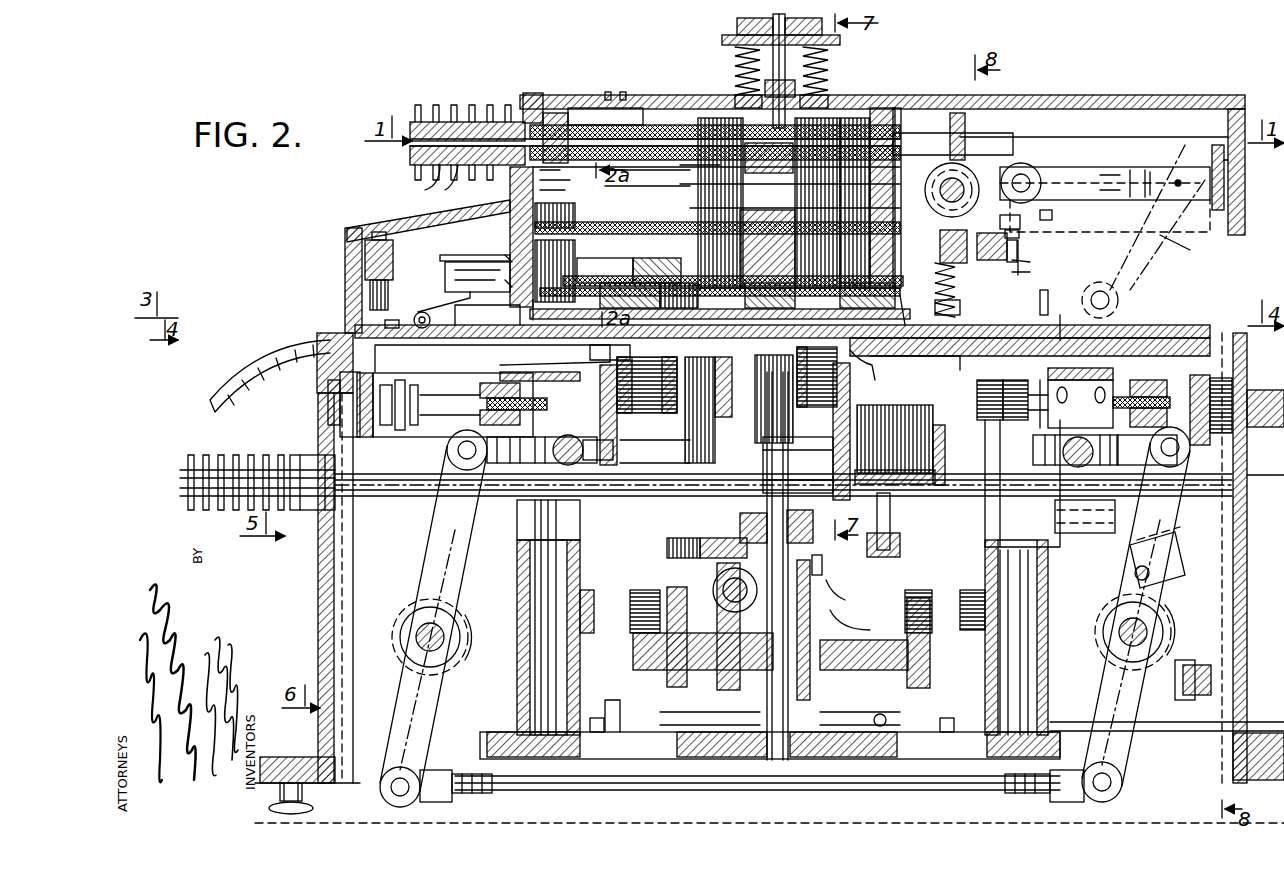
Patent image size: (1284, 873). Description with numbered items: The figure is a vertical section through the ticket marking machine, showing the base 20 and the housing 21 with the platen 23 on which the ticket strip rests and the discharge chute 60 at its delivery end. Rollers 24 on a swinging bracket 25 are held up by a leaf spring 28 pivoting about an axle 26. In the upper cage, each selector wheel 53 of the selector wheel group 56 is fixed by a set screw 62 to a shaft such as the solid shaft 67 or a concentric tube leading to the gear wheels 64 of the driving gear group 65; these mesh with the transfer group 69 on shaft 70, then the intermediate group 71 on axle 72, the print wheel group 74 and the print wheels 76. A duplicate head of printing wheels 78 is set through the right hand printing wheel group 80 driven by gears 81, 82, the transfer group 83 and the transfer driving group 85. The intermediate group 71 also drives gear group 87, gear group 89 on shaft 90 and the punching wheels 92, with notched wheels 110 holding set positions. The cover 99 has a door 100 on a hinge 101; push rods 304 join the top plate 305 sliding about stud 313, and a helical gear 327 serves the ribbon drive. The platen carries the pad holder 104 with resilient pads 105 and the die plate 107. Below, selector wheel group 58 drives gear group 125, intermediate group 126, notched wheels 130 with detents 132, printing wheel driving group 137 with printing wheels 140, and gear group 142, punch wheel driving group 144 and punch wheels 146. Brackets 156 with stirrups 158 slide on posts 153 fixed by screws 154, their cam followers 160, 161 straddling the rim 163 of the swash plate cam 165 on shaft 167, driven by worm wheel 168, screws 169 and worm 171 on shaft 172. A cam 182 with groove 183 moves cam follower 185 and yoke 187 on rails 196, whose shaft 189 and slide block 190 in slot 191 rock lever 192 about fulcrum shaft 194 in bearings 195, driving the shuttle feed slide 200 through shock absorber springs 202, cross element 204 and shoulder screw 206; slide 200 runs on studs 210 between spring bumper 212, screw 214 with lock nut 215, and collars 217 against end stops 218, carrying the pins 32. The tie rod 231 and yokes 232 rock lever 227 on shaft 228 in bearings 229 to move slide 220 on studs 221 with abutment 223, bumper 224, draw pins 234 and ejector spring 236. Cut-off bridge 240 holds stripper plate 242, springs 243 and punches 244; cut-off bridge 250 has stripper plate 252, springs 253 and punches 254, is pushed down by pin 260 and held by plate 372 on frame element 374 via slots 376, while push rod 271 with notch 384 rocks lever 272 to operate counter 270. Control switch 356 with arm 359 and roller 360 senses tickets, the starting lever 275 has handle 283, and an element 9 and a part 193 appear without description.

The cover 99 is at (940, 97).
The door 100 is at (562, 95).
The hinge 101 is at (620, 92).
The set screw 62 is at (440, 110).
The solid shaft 67 is at (410, 145).
The selector wheel group 56 is at (402, 173).
The selector wheels 53 is at (455, 178).
The gear wheels 64 is at (720, 120).
The driving gear group 65 is at (690, 117).
The top plate 305 is at (735, 40).
The push rods 304 is at (735, 50).
The stud 313 is at (787, 46).
The transfer driving group 85 is at (830, 120).
The transfer group 83 is at (888, 140).
The gears 82 is at (895, 150).
The helical gear 327 is at (966, 118).
The axle 72 is at (512, 230).
The gear group 87 is at (560, 215).
The transfer group 69 is at (680, 170).
The shaft 70 is at (680, 186).
The intermediate group 71 is at (690, 210).
The print wheel group 74 is at (640, 245).
The print wheels 76 is at (762, 265).
The printing wheels 78 is at (828, 265).
The gears 81 is at (872, 225).
The rollers 24 is at (1028, 178).
The bracket 25 is at (1120, 180).
The leaf spring 28 is at (1225, 195).
The side wall 9 is at (1250, 178).
The gear group 89 is at (512, 260).
The shaft 90 is at (512, 285).
The punching wheels 92 is at (645, 258).
The cut-off bridge 240 is at (393, 243).
The coil springs 243 is at (350, 268).
The punches 244 is at (340, 300).
The stripper plate 242 is at (360, 320).
The control switch 356 is at (455, 265).
The arm 359 is at (445, 290).
The roller 360 is at (420, 318).
The notched wheels 110 is at (520, 318).
The lever 272 is at (1052, 215).
The pin 260 is at (1020, 222).
The notch 384 is at (1019, 234).
The slots 376 is at (1007, 252).
The plate 372 is at (1055, 245).
The push rod 271 is at (1030, 268).
The frame element 374 is at (1060, 255).
The cut-off bridge 250 is at (967, 250).
The counter 270 is at (1190, 250).
The springs 253 is at (930, 281).
The punches 254 is at (1040, 312).
The right hand printing wheel group 80 is at (905, 310).
The stripper plate 252 is at (936, 310).
The pins 32 is at (1060, 328).
The platen 23 is at (345, 328).
The discharge chute 60 is at (258, 362).
The selector wheel group 58 is at (214, 514).
The housing 21 is at (316, 598).
The base 20 is at (310, 757).
The bumper 224 is at (385, 388).
The adjustable abutment 223 is at (478, 400).
The studs 221 is at (470, 412).
The slide 220 is at (468, 432).
The spring 236 is at (500, 350).
The draw pins 234 is at (495, 366).
The die plate 107 is at (590, 358).
The punch wheels 146 is at (645, 368).
The punch wheel driving group 144 is at (700, 368).
The gear group 142 is at (690, 455).
The printing wheel driving group 137 is at (774, 399).
The printing wheels 140 is at (811, 393).
The intermediate group 126 is at (780, 452).
The notched wheels 130 is at (935, 420).
The spring pressed detents 132 is at (937, 478).
The pad holder 104 is at (855, 355).
The resilient pads 105 is at (870, 362).
The end stop 218 is at (977, 388).
The studs 210 is at (1018, 390).
The collar 217 is at (985, 412).
The cross element 204 is at (1080, 437).
The lock nut 215 is at (1160, 395).
The screw 214 is at (1195, 380).
The spring bumper 212 is at (1225, 380).
The shuttle feed slide 200 is at (1033, 428).
The shoulder screw 206 is at (1040, 455).
The shock absorber springs 202 is at (1050, 468).
The yoke 187 is at (1070, 510).
The clevis 193 is at (1135, 463).
The axle 26 is at (1250, 490).
The gear group 125 is at (738, 545).
The cam 182 is at (665, 540).
The groove 183 is at (700, 542).
The worm 171 is at (700, 562).
The cam followers 160 is at (640, 590).
The shaft 172 is at (713, 585).
The shaft 167 is at (788, 765).
The cam follower 185 is at (900, 545).
The rails 196 is at (822, 562).
The worm wheel 168 is at (838, 590).
The screws 169 is at (812, 600).
The swash plate cam 165 is at (840, 612).
The rim 163 is at (848, 650).
The stirrup 158 is at (980, 578).
The brackets 156 is at (520, 600).
The posts 153 is at (530, 600).
The cam followers 161 is at (610, 732).
The lever 227 is at (445, 566).
The shaft 228 is at (428, 637).
The bearings 229 is at (464, 652).
The lever 192 is at (1098, 665).
The fulcrum shaft 194 is at (1119, 630).
The bearings 195 is at (1098, 625).
The shaft 189 is at (1160, 582).
The slide block 190 is at (1150, 573).
The slot 191 is at (1165, 545).
The tie rod 231 is at (700, 791).
The yokes 232 is at (440, 798).
The screws 154 is at (522, 792).
The starting lever 275 is at (1175, 732).
The handle 283 is at (1260, 716).